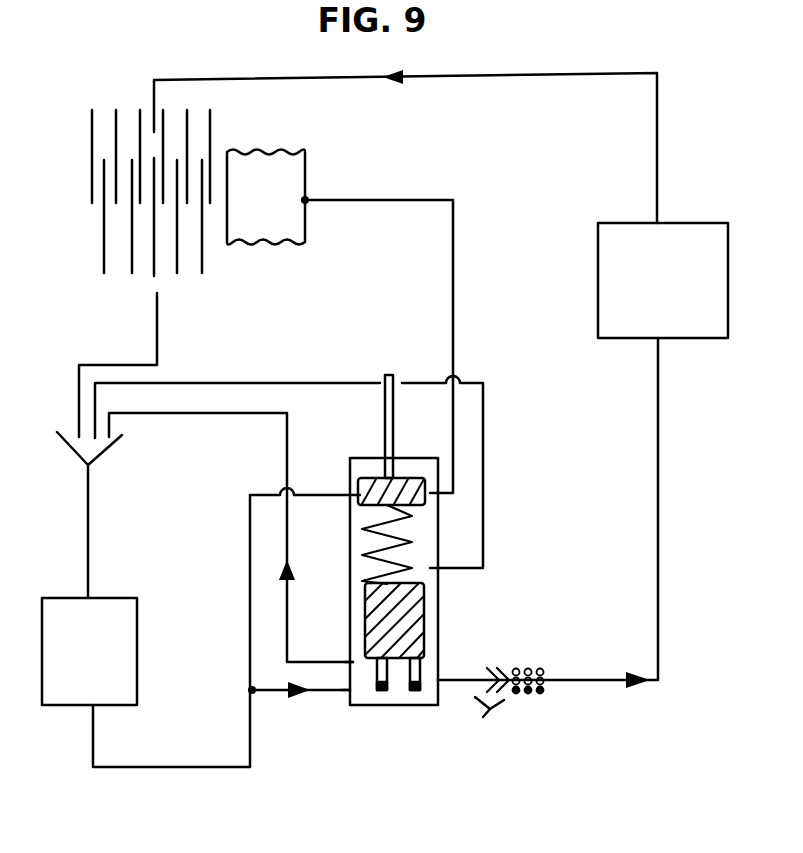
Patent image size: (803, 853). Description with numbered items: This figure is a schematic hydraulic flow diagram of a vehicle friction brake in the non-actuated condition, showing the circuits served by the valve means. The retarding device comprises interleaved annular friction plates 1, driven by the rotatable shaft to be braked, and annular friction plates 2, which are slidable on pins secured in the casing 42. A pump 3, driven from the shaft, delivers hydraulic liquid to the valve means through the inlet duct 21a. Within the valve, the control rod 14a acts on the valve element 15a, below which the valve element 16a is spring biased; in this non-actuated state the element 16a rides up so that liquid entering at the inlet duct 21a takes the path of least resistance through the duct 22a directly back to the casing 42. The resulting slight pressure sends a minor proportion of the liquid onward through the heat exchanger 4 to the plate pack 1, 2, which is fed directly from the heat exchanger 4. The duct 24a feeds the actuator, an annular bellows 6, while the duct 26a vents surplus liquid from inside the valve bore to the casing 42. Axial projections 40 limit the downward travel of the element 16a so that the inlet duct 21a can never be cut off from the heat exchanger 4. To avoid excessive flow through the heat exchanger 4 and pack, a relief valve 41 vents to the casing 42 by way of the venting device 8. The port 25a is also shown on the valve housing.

The annular friction plates 1 is at (92, 113).
The annular friction plates 2 is at (104, 240).
The pump 3 is at (125, 658).
The heat exchanger 4 is at (687, 325).
The annular bellows 6 is at (310, 166).
The venting device 8 is at (515, 656).
The control rod 14a is at (393, 423).
The valve element 15a is at (373, 485).
The valve element 16a is at (427, 620).
The inlet duct 21a is at (352, 692).
The duct 22a is at (350, 655).
The duct 24a is at (438, 500).
The pilot port 25a is at (343, 498).
The duct 26a is at (438, 572).
The axial projections 40 is at (415, 691).
The relief valve 41 is at (513, 700).
The casing 42 is at (87, 452).